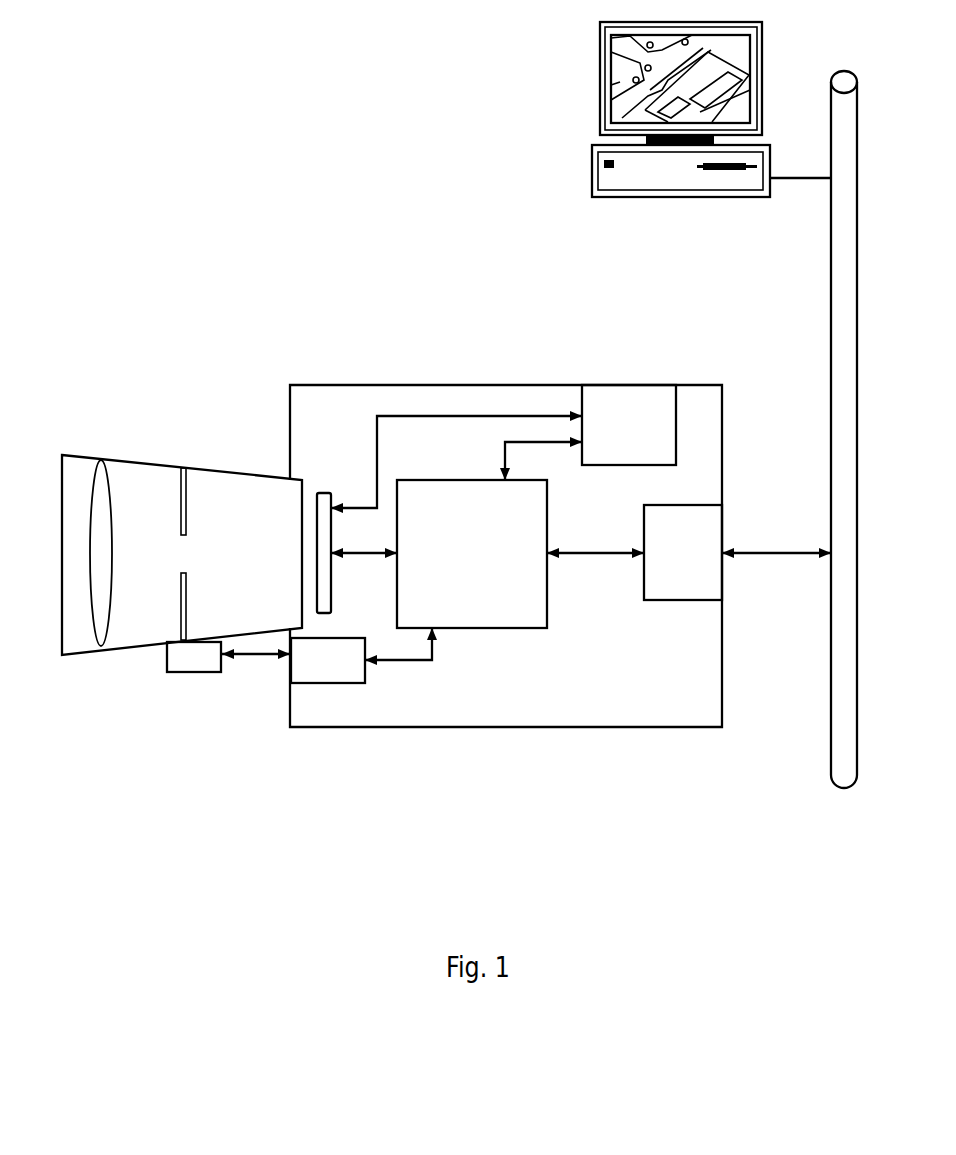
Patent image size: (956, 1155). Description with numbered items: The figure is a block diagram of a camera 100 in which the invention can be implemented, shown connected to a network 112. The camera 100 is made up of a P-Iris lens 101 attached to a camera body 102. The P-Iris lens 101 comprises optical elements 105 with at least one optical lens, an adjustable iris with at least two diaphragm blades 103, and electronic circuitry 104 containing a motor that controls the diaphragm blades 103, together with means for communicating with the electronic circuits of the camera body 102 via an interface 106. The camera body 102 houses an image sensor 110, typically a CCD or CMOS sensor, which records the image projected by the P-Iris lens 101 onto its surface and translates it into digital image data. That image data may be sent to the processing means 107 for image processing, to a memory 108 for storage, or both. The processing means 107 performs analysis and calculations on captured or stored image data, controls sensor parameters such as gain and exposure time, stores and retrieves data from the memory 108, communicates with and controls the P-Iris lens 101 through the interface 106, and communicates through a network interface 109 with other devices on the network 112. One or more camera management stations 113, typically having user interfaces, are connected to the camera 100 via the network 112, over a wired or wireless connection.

The camera 100 is at (247, 237).
The P-Iris lens 101 is at (132, 470).
The camera body 102 is at (513, 400).
The diaphragm blades 103 is at (184, 472).
The electronic circuitry 104 is at (193, 668).
The optical elements 105 is at (102, 630).
The interface 106 is at (349, 673).
The processing means 107 is at (494, 567).
The memory 108 is at (651, 439).
The network interface 109 is at (705, 567).
The image sensor 110 is at (322, 500).
The network 112 is at (830, 415).
The camera management station 113 is at (598, 172).